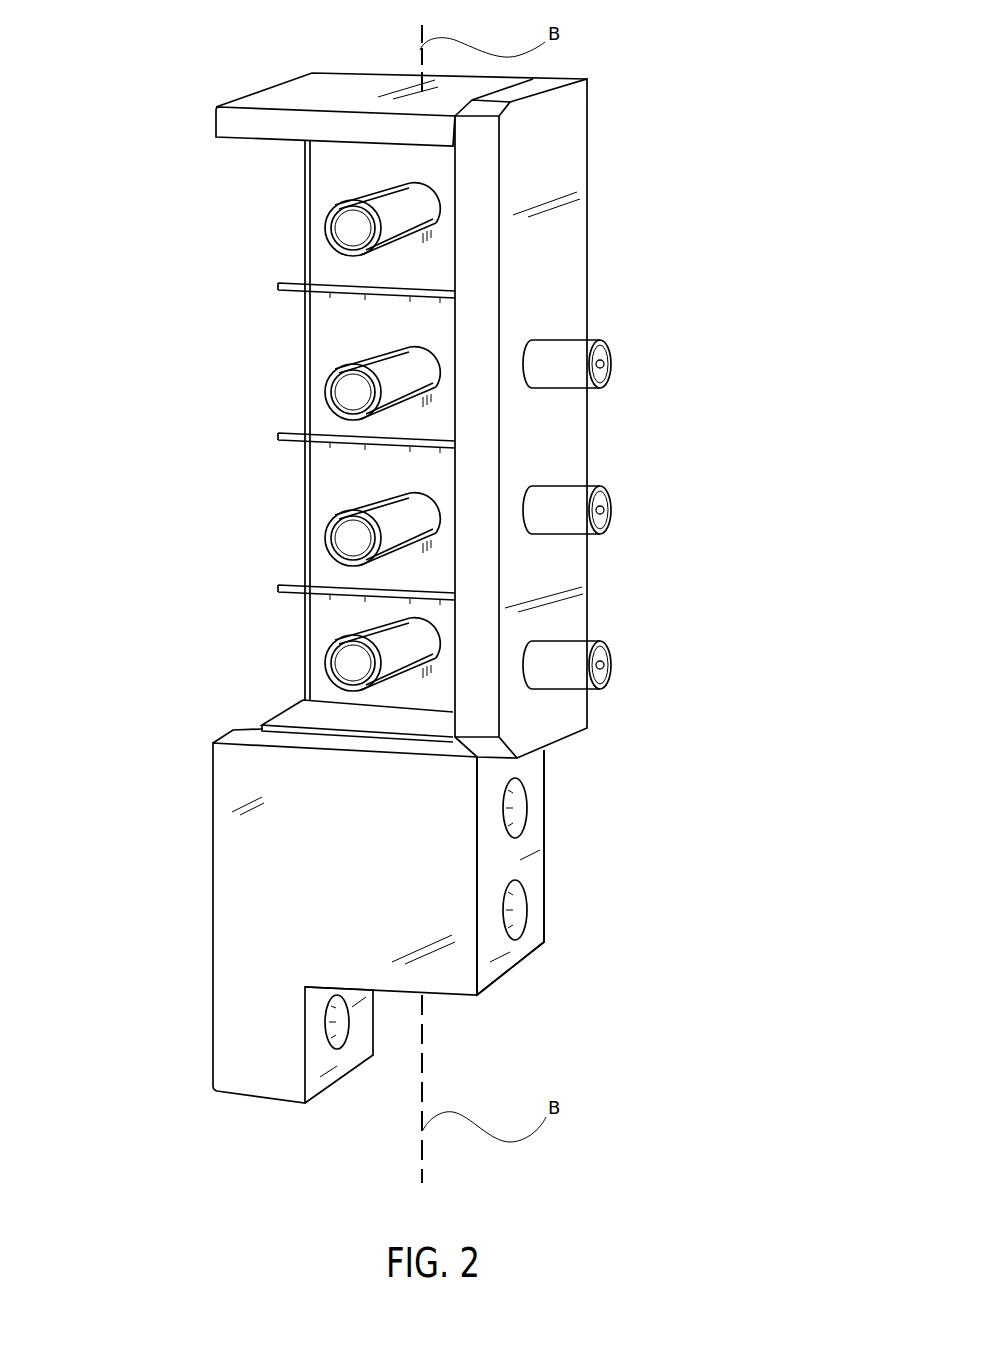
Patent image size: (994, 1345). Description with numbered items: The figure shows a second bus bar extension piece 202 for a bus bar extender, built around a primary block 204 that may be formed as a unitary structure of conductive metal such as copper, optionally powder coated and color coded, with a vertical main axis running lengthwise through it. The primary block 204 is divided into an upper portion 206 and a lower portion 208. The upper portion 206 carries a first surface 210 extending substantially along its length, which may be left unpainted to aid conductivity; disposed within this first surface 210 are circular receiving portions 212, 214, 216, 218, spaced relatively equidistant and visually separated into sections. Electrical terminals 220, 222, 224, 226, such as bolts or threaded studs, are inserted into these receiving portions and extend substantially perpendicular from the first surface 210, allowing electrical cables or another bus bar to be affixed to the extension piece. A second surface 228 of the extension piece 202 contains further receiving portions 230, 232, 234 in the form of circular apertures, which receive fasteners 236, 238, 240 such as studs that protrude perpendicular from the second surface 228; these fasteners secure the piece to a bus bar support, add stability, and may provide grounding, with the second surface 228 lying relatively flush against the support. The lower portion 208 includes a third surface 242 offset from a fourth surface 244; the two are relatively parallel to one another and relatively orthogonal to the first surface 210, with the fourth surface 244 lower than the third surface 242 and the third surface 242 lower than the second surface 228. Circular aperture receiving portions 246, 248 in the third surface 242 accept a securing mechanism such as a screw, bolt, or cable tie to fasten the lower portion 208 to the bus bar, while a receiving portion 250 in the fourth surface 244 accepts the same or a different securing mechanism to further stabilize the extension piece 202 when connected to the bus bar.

The second bus bar extension piece 202 is at (676, 112).
The primary block 204 is at (250, 890).
The upper portion 206 is at (155, 109).
The lower portion 208 is at (155, 735).
The first surface 210 is at (313, 267).
The receiving portion 212 is at (413, 178).
The receiving portion 214 is at (418, 337).
The receiving portion 216 is at (418, 484).
The receiving portion 218 is at (395, 617).
The electrical terminal 220 is at (323, 222).
The electrical terminal 222 is at (323, 390).
The electrical terminal 224 is at (323, 540).
The electrical terminal 226 is at (323, 668).
The second surface 228 is at (556, 262).
The receiving portion 230 is at (533, 340).
The receiving portion 232 is at (533, 486).
The receiving portion 234 is at (533, 641).
The fastener 236 is at (612, 352).
The fastener 238 is at (612, 498).
The fastener 240 is at (612, 655).
The third surface 242 is at (531, 840).
The fourth surface 244 is at (373, 1055).
The receiving portion 246 is at (523, 793).
The receiving portion 248 is at (527, 906).
The receiving portion 250 is at (350, 1040).